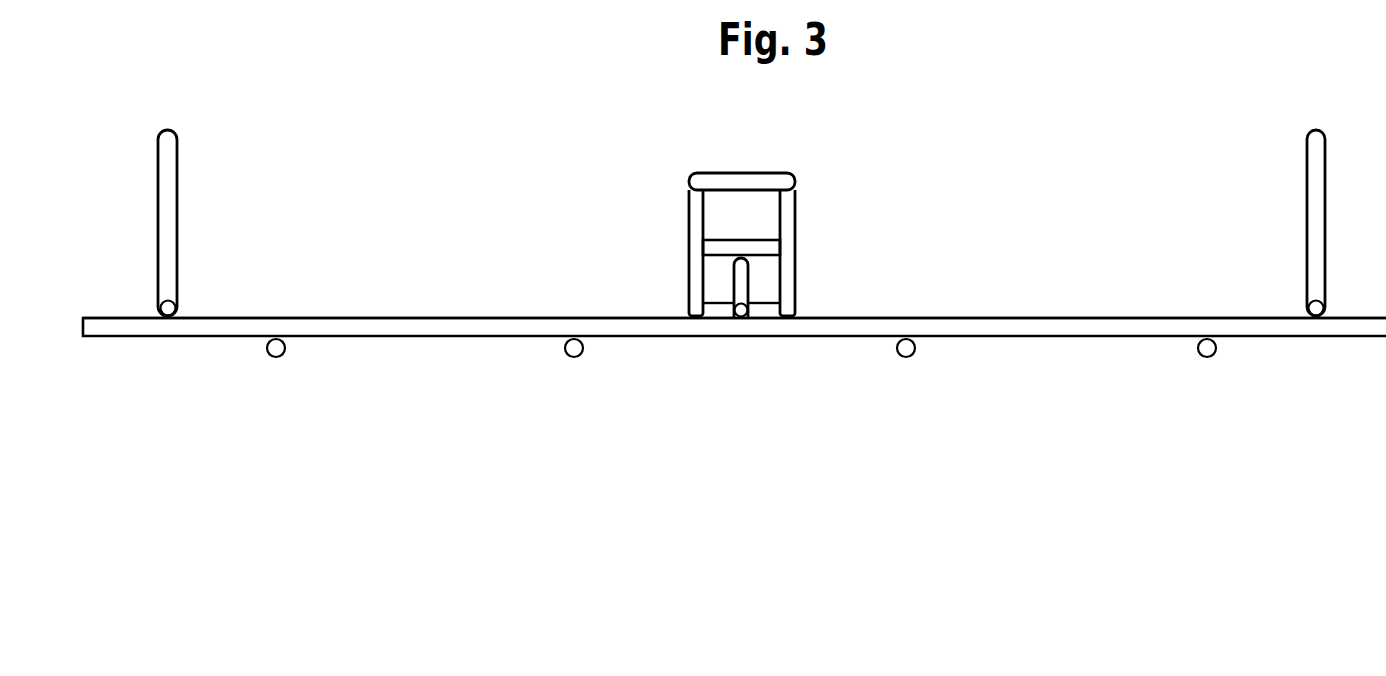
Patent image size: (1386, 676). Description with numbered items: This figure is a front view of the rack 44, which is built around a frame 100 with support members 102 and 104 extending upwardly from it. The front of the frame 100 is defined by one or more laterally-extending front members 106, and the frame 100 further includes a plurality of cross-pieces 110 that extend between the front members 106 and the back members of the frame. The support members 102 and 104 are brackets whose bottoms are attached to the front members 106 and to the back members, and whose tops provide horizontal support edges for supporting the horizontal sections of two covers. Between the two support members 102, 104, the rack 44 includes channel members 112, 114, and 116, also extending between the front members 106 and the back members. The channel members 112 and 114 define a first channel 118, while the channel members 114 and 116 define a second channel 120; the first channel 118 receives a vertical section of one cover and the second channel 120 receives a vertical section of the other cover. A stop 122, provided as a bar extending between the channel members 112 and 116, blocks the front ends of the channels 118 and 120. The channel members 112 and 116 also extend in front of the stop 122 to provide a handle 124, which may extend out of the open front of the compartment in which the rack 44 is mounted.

The rack 44 is at (448, 536).
The frame 100 is at (453, 348).
The support member 102 is at (173, 187).
The support member 104 is at (1307, 172).
The front member 106 is at (1092, 317).
The cross-piece 110 is at (272, 352).
The channel member 112 is at (688, 292).
The channel member 114 is at (734, 272).
The channel member 116 is at (790, 273).
The first channel 118 is at (725, 293).
The second channel 120 is at (765, 293).
The stop 122 is at (763, 240).
The handle 124 is at (723, 173).